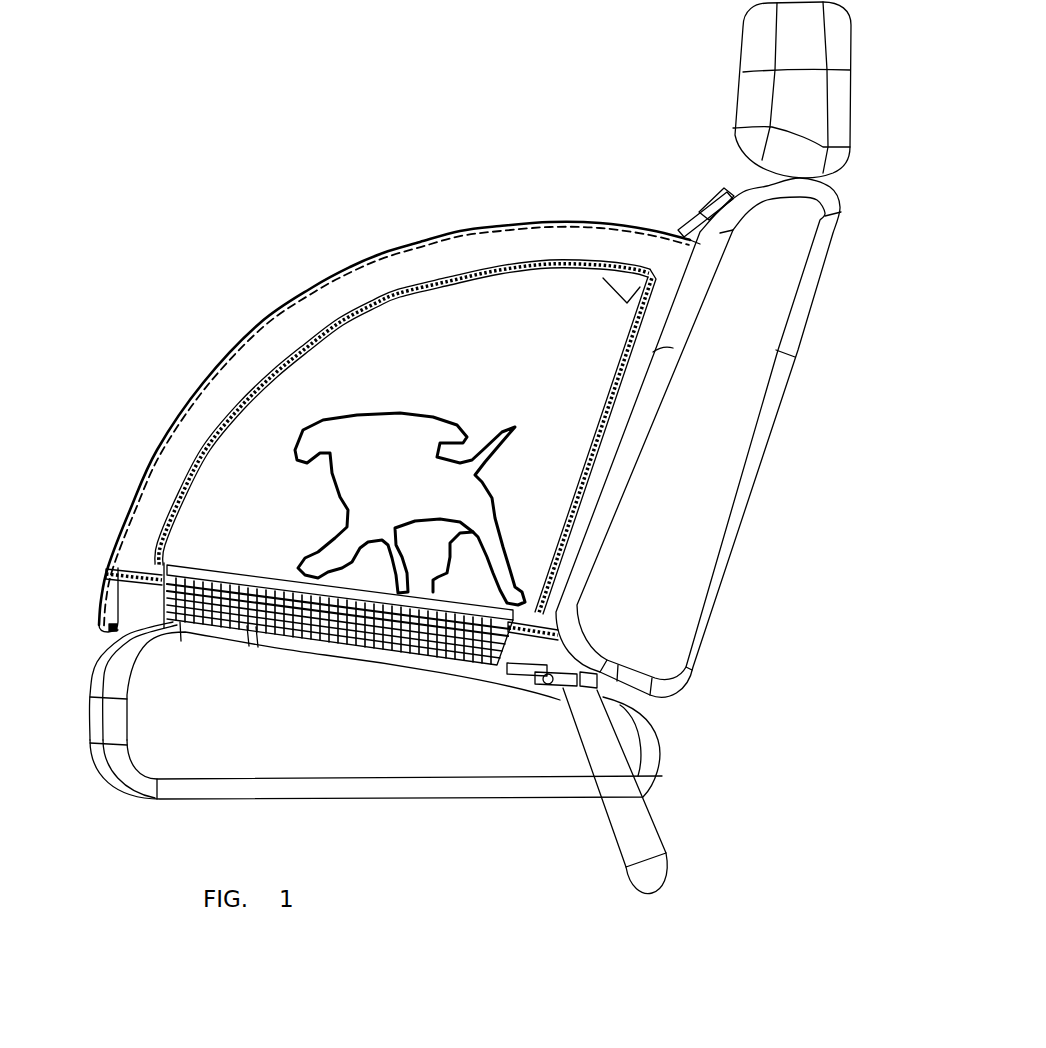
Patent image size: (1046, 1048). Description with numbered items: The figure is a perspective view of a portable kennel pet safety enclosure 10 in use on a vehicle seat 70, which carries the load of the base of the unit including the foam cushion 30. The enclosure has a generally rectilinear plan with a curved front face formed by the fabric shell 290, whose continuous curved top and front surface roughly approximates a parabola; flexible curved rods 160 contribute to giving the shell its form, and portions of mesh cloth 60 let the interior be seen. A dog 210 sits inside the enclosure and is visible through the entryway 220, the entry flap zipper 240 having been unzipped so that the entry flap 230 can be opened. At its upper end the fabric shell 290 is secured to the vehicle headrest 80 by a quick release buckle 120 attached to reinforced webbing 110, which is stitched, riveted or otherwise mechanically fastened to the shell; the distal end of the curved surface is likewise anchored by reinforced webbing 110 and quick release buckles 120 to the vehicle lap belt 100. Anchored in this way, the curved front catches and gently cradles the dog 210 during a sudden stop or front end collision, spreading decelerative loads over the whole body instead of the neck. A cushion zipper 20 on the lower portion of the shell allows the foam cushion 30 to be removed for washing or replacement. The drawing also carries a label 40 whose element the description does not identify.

The portable kennel pet safety enclosure 10 is at (663, 287).
The cushion zipper 20 is at (143, 576).
The foam cushion 30 is at (146, 610).
The side zipper 40 is at (637, 352).
The mesh cloth 60 is at (403, 650).
The vehicle seat 70 is at (780, 256).
The vehicle headrest 80 is at (793, 102).
The vehicle lap belt 100 is at (605, 817).
The reinforced webbing 110 is at (740, 182).
The quick release buckle 120 is at (700, 213).
The curved rods 160 is at (347, 270).
The dog 210 is at (338, 417).
The entryway 220 is at (267, 502).
The entry flap 230 is at (377, 647).
The entry flap zipper 240 is at (240, 413).
The fabric shell 290 is at (433, 240).